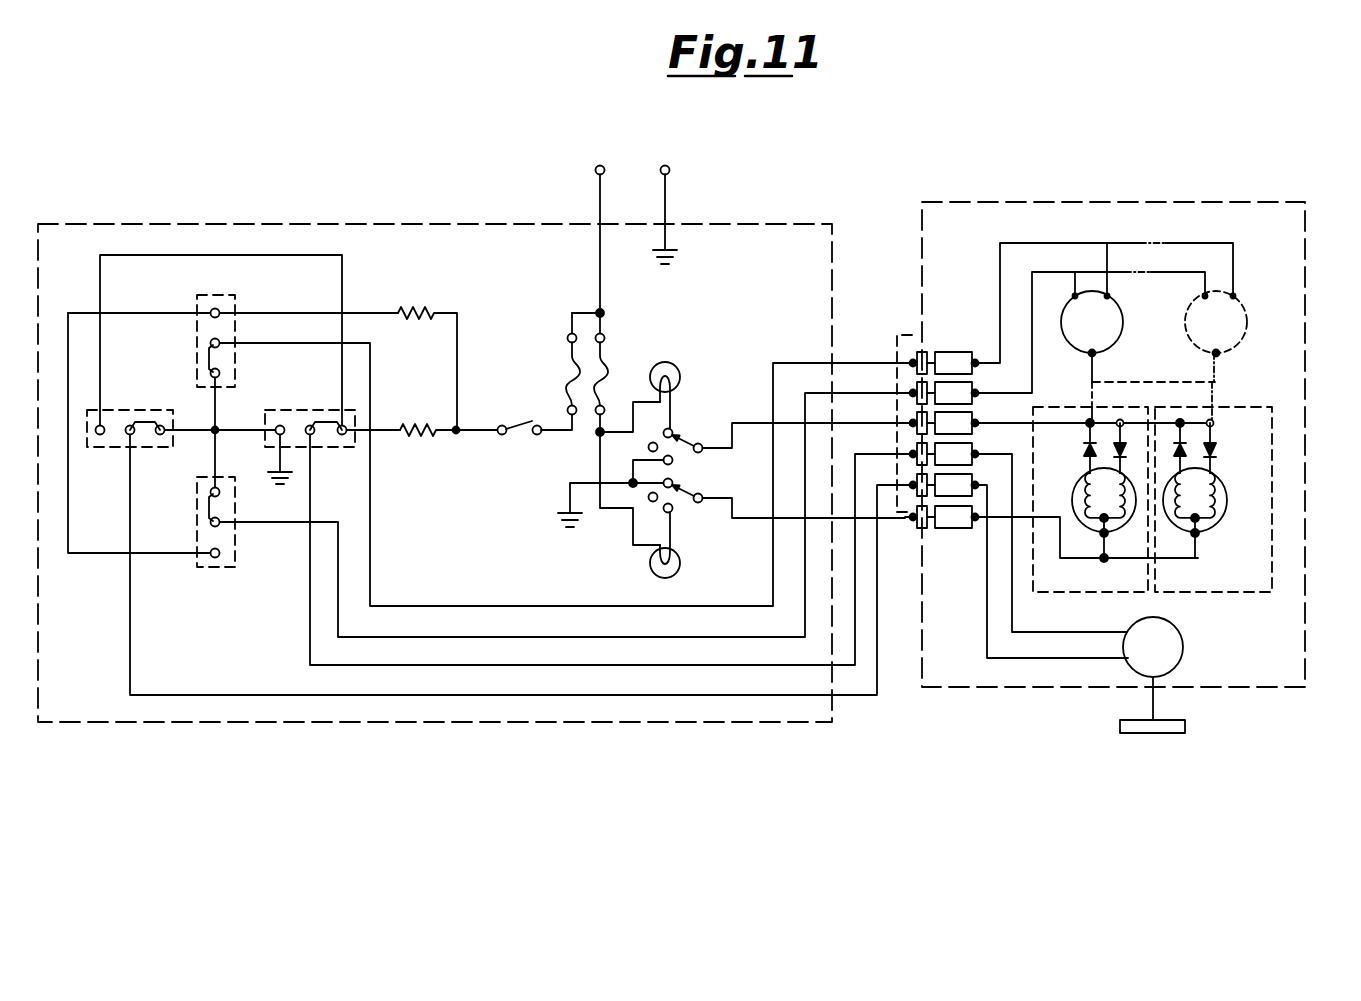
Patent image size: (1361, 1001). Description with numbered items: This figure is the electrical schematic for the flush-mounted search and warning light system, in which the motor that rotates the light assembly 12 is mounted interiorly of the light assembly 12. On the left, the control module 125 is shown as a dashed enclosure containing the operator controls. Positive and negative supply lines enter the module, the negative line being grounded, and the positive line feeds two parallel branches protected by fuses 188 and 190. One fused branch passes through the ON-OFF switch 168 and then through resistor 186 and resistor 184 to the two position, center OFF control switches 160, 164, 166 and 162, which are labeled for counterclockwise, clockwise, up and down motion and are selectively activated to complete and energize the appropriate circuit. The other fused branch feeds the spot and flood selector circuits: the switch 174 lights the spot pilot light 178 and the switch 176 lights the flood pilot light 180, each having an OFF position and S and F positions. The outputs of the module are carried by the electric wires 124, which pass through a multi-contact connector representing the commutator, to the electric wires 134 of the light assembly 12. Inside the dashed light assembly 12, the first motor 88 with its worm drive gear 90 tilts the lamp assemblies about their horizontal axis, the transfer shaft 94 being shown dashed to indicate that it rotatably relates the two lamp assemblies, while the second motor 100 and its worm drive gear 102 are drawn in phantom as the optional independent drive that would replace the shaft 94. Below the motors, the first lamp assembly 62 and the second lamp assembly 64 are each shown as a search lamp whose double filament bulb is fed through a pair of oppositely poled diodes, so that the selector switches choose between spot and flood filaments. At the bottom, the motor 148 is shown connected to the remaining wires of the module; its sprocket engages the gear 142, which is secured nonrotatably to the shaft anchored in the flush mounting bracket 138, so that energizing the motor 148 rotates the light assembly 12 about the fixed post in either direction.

The light assembly 12 is at (1180, 189).
The control module 125 is at (155, 222).
The control switch 166 is at (236, 296).
The control switch 162 is at (235, 562).
The control switch 160 is at (87, 448).
The control switch 164 is at (325, 452).
The resistor 184 is at (422, 313).
The resistor 186 is at (407, 420).
The ON-OFF switch 168 is at (502, 426).
The fuse 188 is at (566, 375).
The fuse 190 is at (606, 375).
The pilot light 178 is at (681, 379).
The switch 174 is at (683, 432).
The switch 176 is at (690, 508).
The pilot light 180 is at (653, 562).
The electric wires 124 is at (897, 372).
The electric wire 134 is at (985, 423).
The first motor 88 is at (1122, 333).
The worm drive gear 90 is at (1088, 364).
The transfer shaft 94 is at (1158, 383).
The second motor 100 is at (1243, 338).
The worm drive gear 102 is at (1222, 358).
The first lamp assembly 62 is at (1089, 512).
The second lamp assembly 64 is at (1218, 519).
The motor 148 is at (1183, 647).
The gear 142 is at (1093, 698).
The flush mounting bracket 138 is at (1182, 722).